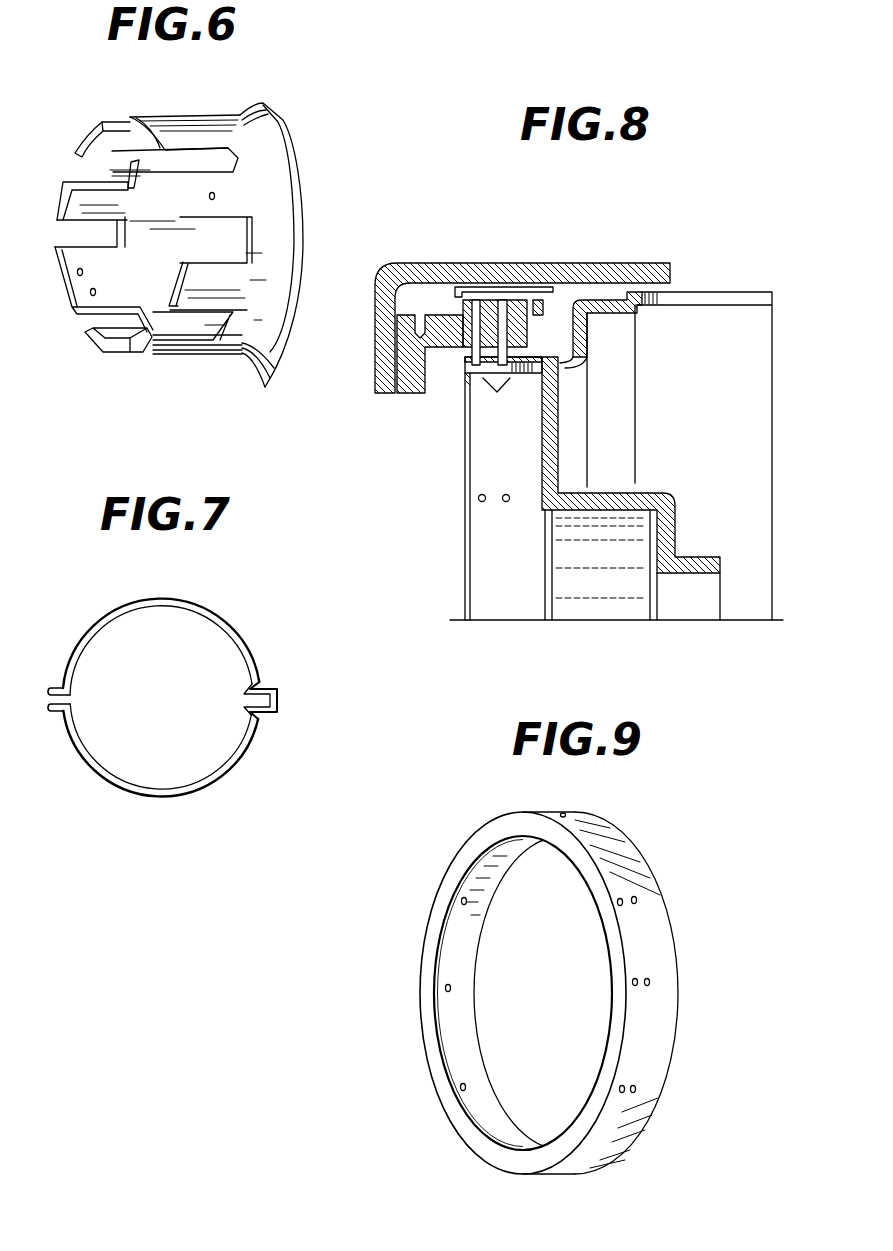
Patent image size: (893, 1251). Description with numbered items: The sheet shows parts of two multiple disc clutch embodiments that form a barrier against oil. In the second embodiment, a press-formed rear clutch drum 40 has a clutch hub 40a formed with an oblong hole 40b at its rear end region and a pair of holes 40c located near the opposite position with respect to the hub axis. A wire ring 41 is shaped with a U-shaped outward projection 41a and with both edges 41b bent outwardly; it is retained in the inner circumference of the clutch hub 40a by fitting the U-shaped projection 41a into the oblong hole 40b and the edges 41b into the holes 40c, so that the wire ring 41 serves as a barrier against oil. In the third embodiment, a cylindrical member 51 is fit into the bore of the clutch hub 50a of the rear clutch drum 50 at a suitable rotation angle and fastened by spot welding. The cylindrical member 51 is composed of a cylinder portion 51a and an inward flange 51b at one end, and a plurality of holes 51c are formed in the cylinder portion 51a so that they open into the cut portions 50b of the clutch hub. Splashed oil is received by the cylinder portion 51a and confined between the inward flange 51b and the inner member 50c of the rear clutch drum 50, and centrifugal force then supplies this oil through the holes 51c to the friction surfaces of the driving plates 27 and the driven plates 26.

In FIG. 8, the driven plates 26 is at (497, 300).
In FIG. 8, the driving plates 27 is at (505, 300).
In FIG. 6, the rear clutch drum 40 is at (258, 100).
In FIG. 6, the clutch hub 40a is at (202, 118).
In FIG. 6, the oblong hole 40b is at (214, 194).
In FIG. 6, the holes 40c is at (83, 270).
In FIG. 7, the wire ring 41 is at (230, 628).
In FIG. 7, the U-shaped outward projection 41a is at (272, 689).
In FIG. 7, the edges 41b is at (57, 713).
In FIG. 8, the rear clutch drum 50 is at (610, 300).
In FIG. 8, the clutch hub 50a is at (565, 350).
In FIG. 8, the cut portions 50b is at (465, 352).
In FIG. 8, the inner member 50c is at (558, 470).
In FIG. 8, the cylindrical member 51 is at (558, 422).
In FIG. 9, the cylindrical member 51 is at (500, 808).
In FIG. 9, the cylinder portion 51a is at (643, 855).
In FIG. 8, the inward flange 51b is at (466, 388).
In FIG. 9, the inward flange 51b is at (437, 917).
In FIG. 8, the holes 51c is at (494, 530).
In FIG. 9, the holes 51c is at (636, 904).